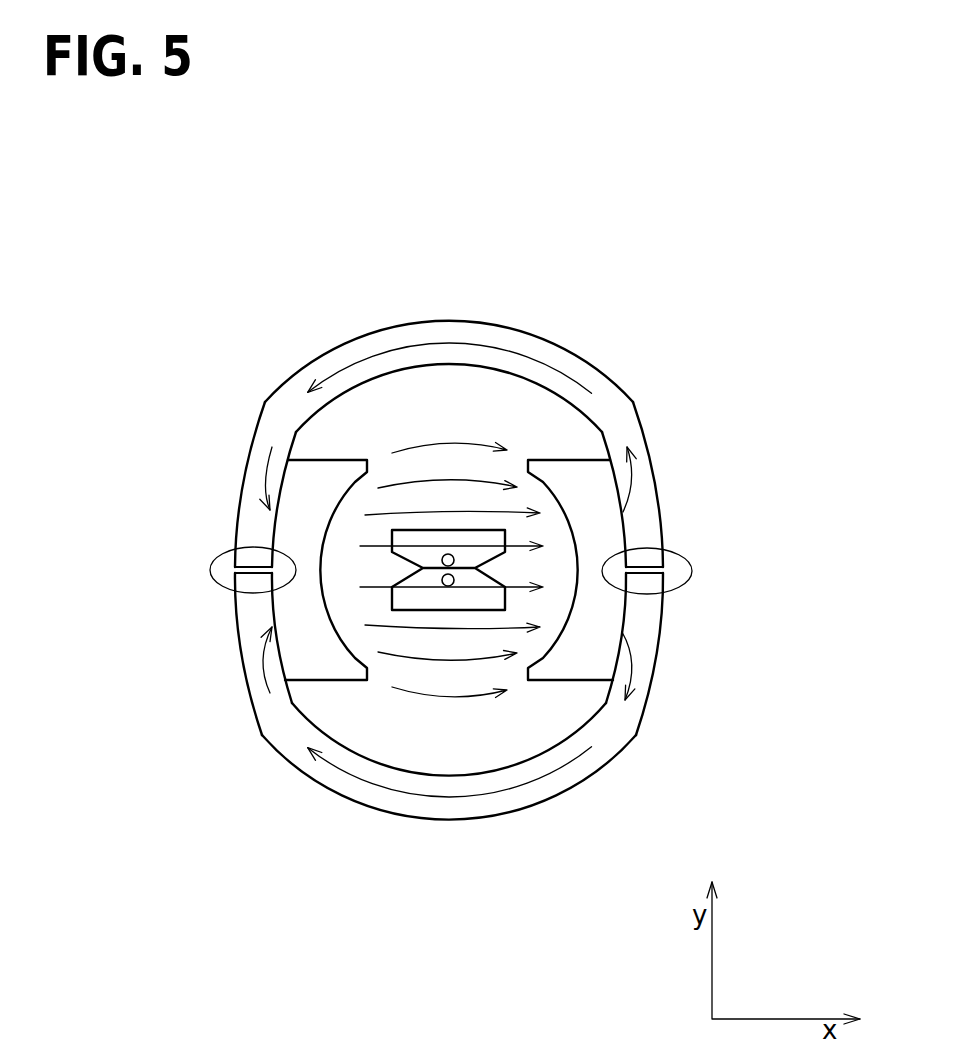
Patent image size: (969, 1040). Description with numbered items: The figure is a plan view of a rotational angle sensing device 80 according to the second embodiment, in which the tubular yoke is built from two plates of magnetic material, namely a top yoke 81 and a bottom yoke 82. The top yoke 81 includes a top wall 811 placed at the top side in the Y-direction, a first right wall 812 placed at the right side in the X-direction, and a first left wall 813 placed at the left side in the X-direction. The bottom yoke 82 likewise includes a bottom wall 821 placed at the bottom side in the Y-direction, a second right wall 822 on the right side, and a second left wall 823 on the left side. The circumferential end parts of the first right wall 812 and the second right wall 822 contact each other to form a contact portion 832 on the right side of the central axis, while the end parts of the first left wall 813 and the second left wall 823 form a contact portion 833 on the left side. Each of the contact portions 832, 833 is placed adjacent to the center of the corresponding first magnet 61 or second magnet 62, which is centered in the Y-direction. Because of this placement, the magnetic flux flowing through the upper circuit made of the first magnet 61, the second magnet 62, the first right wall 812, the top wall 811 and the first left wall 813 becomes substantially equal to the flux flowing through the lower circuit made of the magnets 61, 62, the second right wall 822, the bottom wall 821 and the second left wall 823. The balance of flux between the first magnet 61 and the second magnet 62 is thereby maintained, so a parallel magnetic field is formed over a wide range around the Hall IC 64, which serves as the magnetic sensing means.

The rotational angle sensing device 80 is at (607, 188).
The top yoke 81 is at (328, 363).
The bottom yoke 82 is at (327, 780).
The top wall 811 is at (473, 332).
The first right wall 812 is at (636, 428).
The first left wall 813 is at (253, 468).
The bottom wall 821 is at (463, 808).
The second right wall 822 is at (650, 622).
The second left wall 823 is at (255, 690).
The contact portion 832 is at (680, 587).
The contact portion 833 is at (217, 583).
The first magnet 61 is at (312, 667).
The second magnet 62 is at (575, 670).
The Hall IC 64 is at (452, 595).